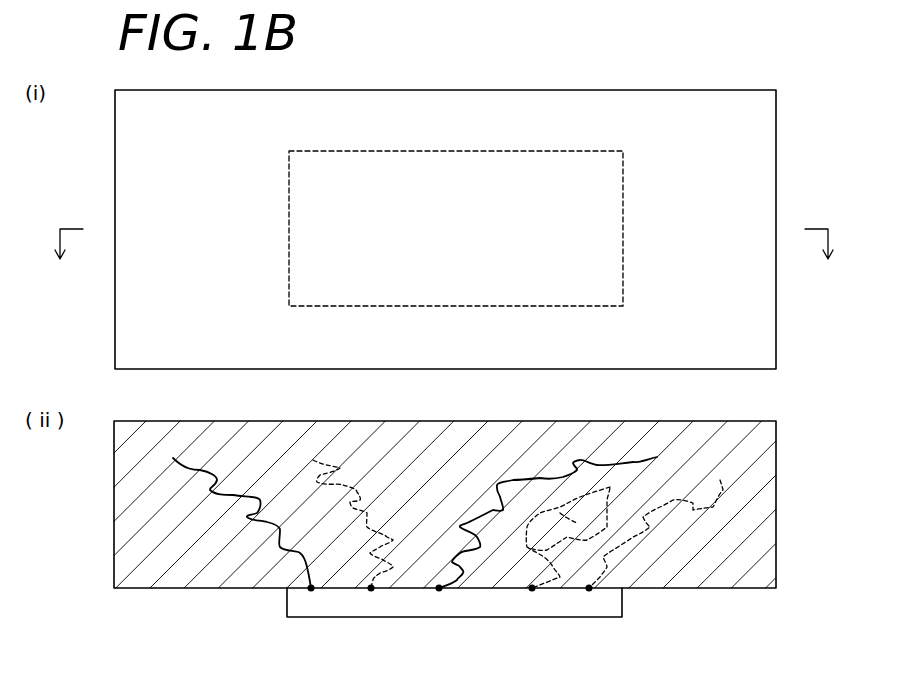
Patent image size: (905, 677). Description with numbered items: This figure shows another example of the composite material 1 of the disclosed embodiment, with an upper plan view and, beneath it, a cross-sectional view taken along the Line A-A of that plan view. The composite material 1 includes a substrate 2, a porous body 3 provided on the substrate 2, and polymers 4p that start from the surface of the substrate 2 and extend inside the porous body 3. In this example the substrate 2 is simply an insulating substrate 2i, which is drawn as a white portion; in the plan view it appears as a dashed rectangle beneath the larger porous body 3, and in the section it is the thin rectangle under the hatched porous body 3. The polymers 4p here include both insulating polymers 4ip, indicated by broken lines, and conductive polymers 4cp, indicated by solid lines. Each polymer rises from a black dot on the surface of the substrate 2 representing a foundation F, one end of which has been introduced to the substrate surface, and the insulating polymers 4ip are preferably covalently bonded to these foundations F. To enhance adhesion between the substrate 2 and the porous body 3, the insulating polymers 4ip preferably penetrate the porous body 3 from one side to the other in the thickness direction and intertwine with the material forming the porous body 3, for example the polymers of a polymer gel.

The composite material 1 is at (750, 63).
The porous body 3 is at (753, 176).
The substrate 2 is at (507, 338).
The insulating substrate 2i is at (508, 163).
The polymers 4p is at (448, 510).
The insulating polymers 4ip is at (362, 495).
The conductive polymers 4cp is at (262, 522).
The foundation F is at (439, 588).
The Line A- A is at (444, 261).